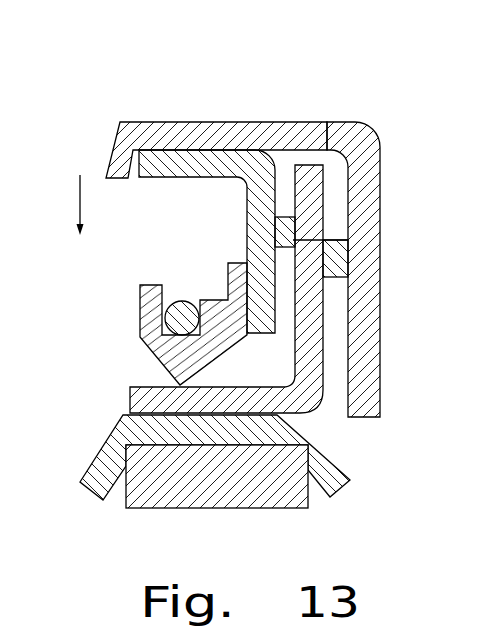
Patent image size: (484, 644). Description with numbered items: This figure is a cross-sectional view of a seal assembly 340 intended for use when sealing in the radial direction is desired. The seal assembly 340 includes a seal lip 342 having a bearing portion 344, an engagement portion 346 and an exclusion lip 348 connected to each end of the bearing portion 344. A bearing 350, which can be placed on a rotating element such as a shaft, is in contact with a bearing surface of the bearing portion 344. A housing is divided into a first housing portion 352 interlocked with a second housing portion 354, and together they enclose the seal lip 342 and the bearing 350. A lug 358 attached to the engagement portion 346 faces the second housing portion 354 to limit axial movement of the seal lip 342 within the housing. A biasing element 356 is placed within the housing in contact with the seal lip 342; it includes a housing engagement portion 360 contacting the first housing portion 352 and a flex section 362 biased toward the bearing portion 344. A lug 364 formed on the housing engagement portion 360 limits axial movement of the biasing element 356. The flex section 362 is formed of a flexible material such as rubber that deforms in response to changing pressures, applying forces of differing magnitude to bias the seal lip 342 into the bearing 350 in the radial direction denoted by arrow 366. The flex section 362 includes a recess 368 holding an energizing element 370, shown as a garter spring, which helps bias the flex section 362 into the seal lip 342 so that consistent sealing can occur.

The seal assembly 340 is at (352, 100).
The seal lip 342 is at (310, 405).
The bearing portion 344 is at (233, 484).
The engagement portion 346 is at (313, 313).
The exclusion lip 348 is at (97, 477).
The bearing 350 is at (267, 490).
The first housing portion 352 is at (170, 132).
The second housing portion 354 is at (365, 153).
The biasing element 356 is at (257, 184).
The lug 358 is at (340, 260).
The housing engagement portion 360 is at (214, 206).
The flex section 362 is at (227, 300).
The lug 364 is at (284, 219).
The arrow 366 is at (83, 192).
The recess 368 is at (151, 303).
The energizing element 370 is at (181, 318).